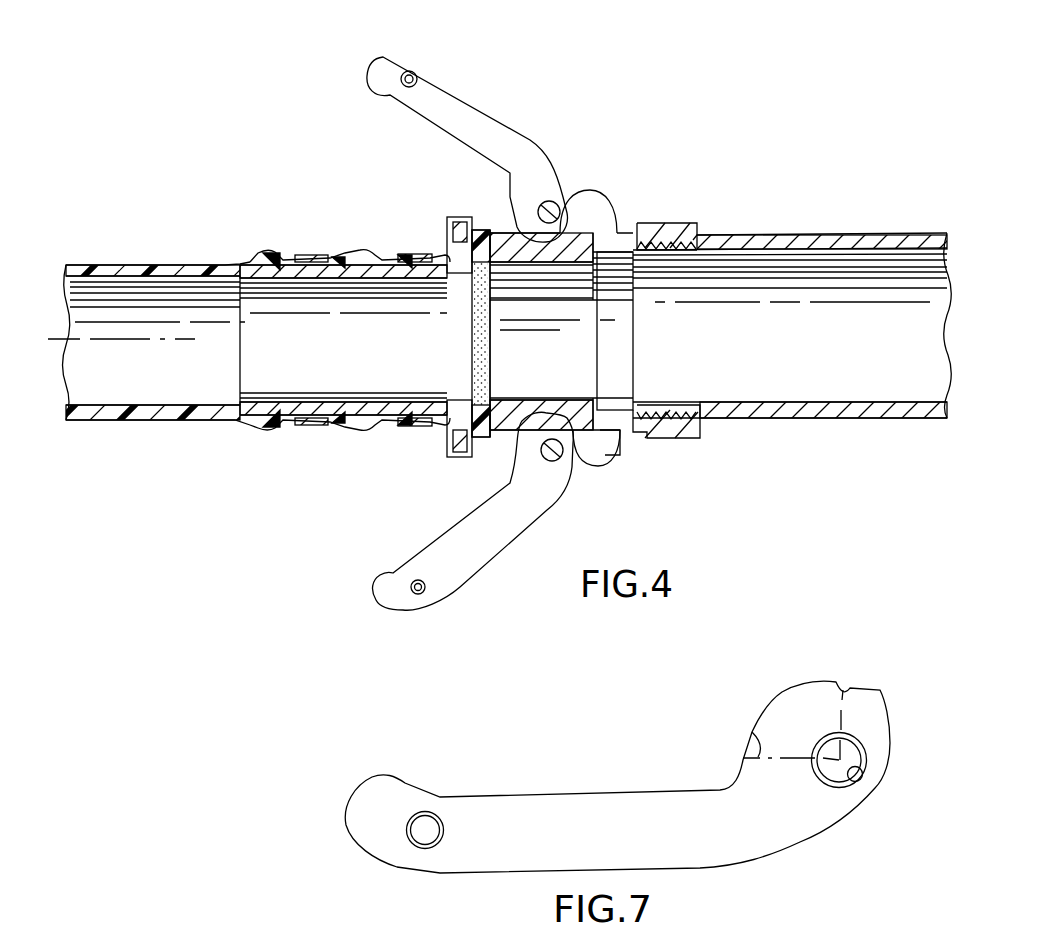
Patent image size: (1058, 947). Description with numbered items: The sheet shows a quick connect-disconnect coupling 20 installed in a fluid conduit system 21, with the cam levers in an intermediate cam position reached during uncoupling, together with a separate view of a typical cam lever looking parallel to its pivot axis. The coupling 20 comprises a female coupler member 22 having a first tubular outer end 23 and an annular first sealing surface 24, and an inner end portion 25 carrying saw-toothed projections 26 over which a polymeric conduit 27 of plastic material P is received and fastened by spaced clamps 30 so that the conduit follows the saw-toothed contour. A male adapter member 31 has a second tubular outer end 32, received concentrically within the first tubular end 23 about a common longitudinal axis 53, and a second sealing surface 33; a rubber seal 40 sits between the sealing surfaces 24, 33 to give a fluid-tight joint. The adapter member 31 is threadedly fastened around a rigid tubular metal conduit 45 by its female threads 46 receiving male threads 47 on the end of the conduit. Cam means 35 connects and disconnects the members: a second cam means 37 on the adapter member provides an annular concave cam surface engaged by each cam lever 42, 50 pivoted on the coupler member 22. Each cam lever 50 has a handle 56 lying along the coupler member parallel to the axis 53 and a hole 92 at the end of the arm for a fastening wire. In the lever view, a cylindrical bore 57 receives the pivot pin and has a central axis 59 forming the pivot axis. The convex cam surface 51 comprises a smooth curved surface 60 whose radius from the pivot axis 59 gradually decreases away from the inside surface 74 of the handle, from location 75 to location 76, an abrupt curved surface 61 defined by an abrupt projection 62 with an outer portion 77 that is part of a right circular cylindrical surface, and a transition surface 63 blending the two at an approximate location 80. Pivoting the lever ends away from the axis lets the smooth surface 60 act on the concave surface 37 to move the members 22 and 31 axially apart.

In FIG. 4, the plastic material P is at (165, 262).
In FIG. 4, the quick connect-disconnect coupling 20 is at (625, 96).
In FIG. 4, the fluid conduit system 21 is at (792, 322).
In FIG. 4, the coupler member 22 is at (528, 338).
In FIG. 4, the first tubular outer end 23 is at (668, 321).
In FIG. 4, the first sealing surface 24 is at (462, 222).
In FIG. 4, the inner end portion 25 is at (325, 349).
In FIG. 4, the saw-toothed projections 26 is at (260, 255).
In FIG. 4, the polymeric conduit 27 is at (108, 262).
In FIG. 4, the clamps 30 is at (298, 427).
In FIG. 4, the adapter member 31 is at (642, 237).
In FIG. 4, the second tubular outer end 32 is at (607, 455).
In FIG. 4, the second sealing surface 33 is at (490, 393).
In FIG. 4, the cam means 35 is at (580, 205).
In FIG. 4, the second cam means 37 is at (595, 228).
In FIG. 4, the seal 40 is at (455, 432).
In FIG. 4, the cam lever 42 is at (450, 95).
In FIG. 4, the tubular conduit 45 is at (888, 420).
In FIG. 4, the female threads 46 is at (670, 448).
In FIG. 4, the male threads 47 is at (675, 440).
In FIG. 4, the cam levers 50 is at (463, 338).
In FIG. 7, the cam levers 50 is at (647, 756).
In FIG. 7, the convex cam surface 51 is at (762, 708).
In FIG. 4, the longitudinal axis 53 is at (152, 342).
In FIG. 4, the handle 56 is at (425, 125).
In FIG. 7, the handle 56 is at (508, 873).
In FIG. 7, the cylindrical bore 57 is at (862, 770).
In FIG. 7, the central axis 59 is at (848, 758).
In FIG. 4, the smooth curved surface 60 is at (500, 215).
In FIG. 7, the smooth curved surface 60 is at (787, 695).
In FIG. 7, the abrupt curved surface 61 is at (870, 690).
In FIG. 7, the abrupt projection 62 is at (883, 690).
In FIG. 7, the transition surface 63 is at (860, 690).
In FIG. 7, the inside surface 74 is at (518, 796).
In FIG. 7, the location 75 is at (750, 735).
In FIG. 7, the location 76 is at (840, 688).
In FIG. 7, the outer portion 77 is at (890, 698).
In FIG. 7, the blending location 80 is at (845, 685).
In FIG. 7, the hole 92 is at (410, 843).